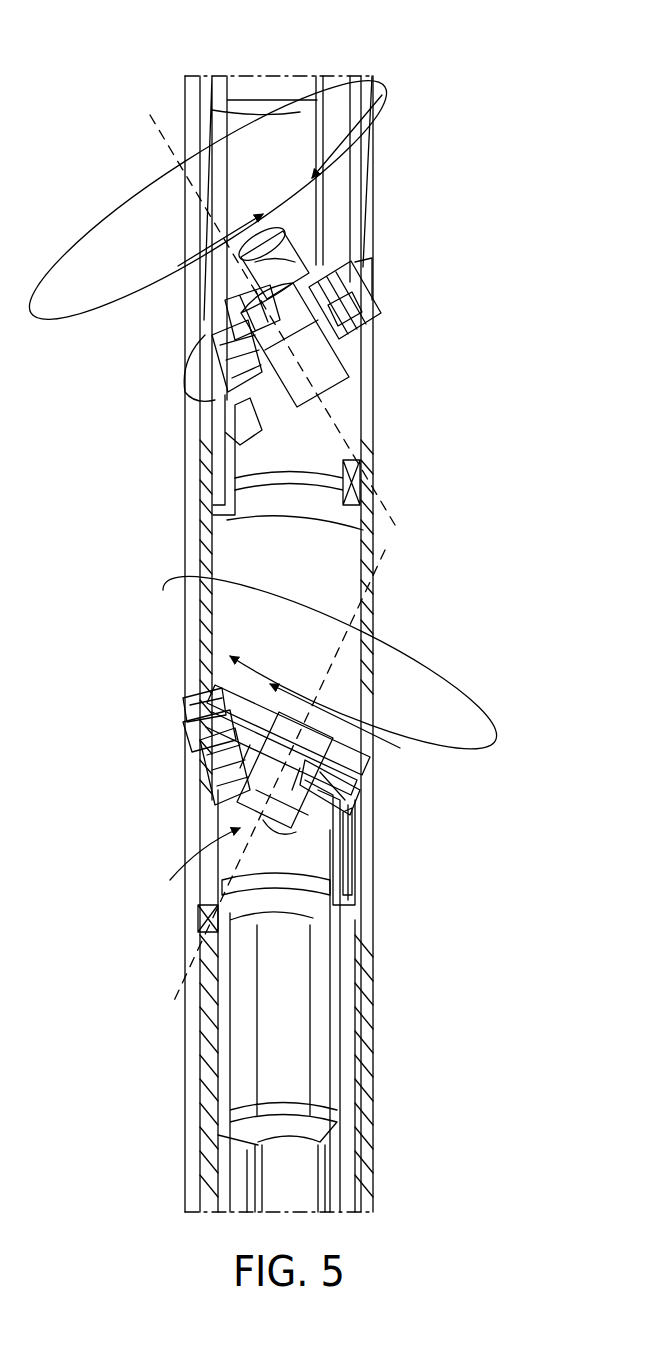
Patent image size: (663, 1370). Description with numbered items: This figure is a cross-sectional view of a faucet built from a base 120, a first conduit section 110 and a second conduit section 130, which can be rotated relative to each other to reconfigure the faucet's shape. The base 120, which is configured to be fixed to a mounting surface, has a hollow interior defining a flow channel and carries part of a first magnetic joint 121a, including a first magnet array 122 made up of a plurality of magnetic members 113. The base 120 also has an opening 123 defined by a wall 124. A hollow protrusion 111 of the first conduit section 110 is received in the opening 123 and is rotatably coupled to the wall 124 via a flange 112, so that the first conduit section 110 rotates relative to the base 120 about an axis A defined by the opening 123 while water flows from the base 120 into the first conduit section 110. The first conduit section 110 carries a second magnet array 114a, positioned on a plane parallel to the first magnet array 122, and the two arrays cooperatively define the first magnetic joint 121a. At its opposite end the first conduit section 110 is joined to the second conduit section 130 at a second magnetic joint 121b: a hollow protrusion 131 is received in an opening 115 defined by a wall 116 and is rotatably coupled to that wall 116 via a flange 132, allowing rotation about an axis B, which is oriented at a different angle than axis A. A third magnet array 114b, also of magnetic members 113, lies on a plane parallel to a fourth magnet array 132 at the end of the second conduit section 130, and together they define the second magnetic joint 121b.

The first conduit section 110 is at (367, 56).
The second conduit section 130 is at (250, 122).
The magnetic members 113 is at (345, 228).
The second magnet array 114a is at (215, 690).
The third magnet array 114b is at (380, 297).
The first magnetic joint 121a is at (178, 745).
The second magnetic joint 121b is at (390, 292).
The wall 116 is at (357, 330).
The opening 115 is at (340, 387).
The protrusion 131 is at (212, 357).
The flange 132 is at (245, 322).
The protrusion 111 is at (270, 780).
The flange 112 is at (260, 808).
The opening 123 is at (240, 845).
The first magnet array 122 is at (340, 822).
The wall 124 is at (345, 860).
The base 120 is at (275, 1010).
The axis A is at (185, 975).
The axis B is at (385, 500).